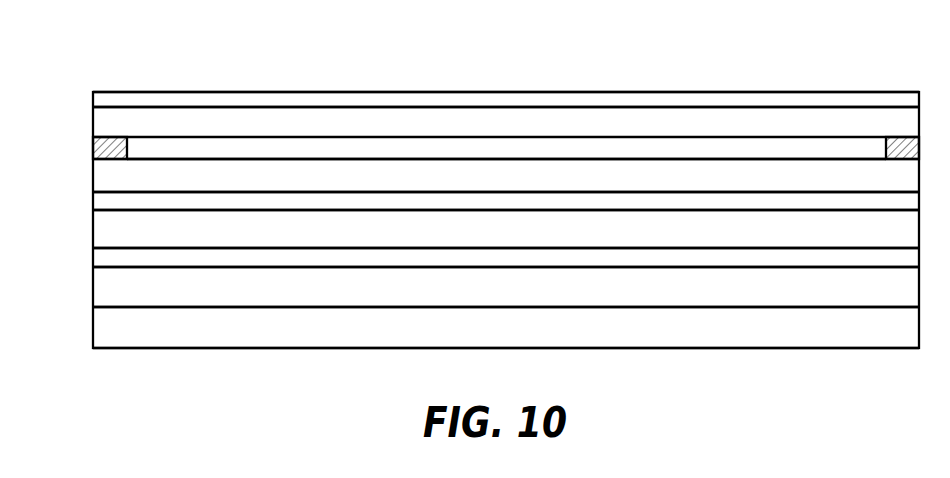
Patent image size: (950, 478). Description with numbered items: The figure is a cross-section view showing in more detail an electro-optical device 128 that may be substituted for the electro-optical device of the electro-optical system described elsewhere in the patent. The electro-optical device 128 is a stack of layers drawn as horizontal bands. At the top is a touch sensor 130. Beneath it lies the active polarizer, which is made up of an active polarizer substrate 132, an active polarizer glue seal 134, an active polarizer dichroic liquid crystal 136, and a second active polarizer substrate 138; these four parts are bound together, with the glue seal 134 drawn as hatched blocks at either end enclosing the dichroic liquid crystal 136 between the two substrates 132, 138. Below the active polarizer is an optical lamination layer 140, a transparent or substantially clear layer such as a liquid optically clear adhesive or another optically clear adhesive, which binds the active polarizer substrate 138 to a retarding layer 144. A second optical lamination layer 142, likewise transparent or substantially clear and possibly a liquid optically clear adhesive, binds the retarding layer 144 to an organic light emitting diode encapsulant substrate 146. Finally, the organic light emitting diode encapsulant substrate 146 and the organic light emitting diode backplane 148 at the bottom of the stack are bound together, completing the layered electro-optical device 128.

The electro-optical device 128 is at (648, 73).
The touch sensor 130 is at (105, 100).
The active polarizer substrate 132 is at (105, 125).
The active polarizer glue seal 134 is at (97, 152).
The active polarizer dichroic liquid crystal 136 is at (203, 147).
The active polarizer substrate 138 is at (105, 175).
The optical lamination layer 140 is at (105, 200).
The optical lamination layer 142 is at (107, 258).
The retarding layer 144 is at (188, 230).
The organic light emitting diode encapsulant substrate 146 is at (258, 285).
The organic light emitting diode backplane 148 is at (107, 327).